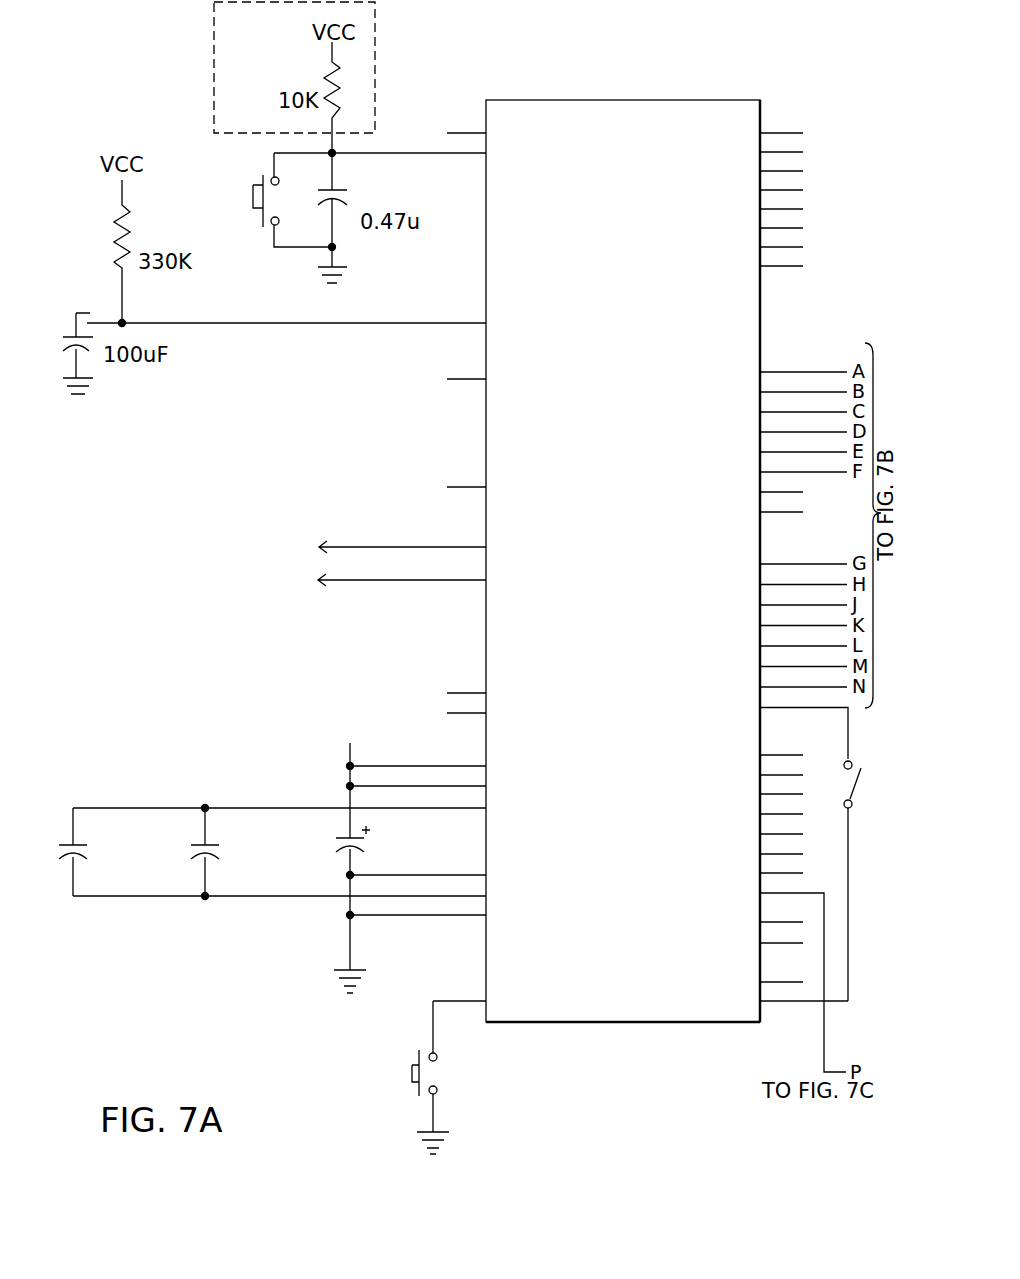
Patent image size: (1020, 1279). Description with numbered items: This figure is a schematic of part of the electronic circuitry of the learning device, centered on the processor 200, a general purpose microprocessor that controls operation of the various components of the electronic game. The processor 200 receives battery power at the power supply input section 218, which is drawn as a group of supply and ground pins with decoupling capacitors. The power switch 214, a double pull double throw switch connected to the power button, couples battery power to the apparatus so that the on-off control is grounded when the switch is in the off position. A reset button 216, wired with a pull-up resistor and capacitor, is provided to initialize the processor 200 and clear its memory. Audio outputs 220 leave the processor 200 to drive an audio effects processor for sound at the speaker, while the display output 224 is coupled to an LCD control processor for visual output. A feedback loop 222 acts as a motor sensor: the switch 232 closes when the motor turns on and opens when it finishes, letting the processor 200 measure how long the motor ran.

The processor 200 is at (634, 1022).
The power switch 214 is at (408, 1073).
The reset button 216 is at (250, 190).
The power supply input section 218 is at (333, 797).
The audio outputs 220 is at (332, 540).
The feedback loop 222 is at (848, 990).
The display output 224 is at (810, 929).
The switch 232 is at (852, 761).